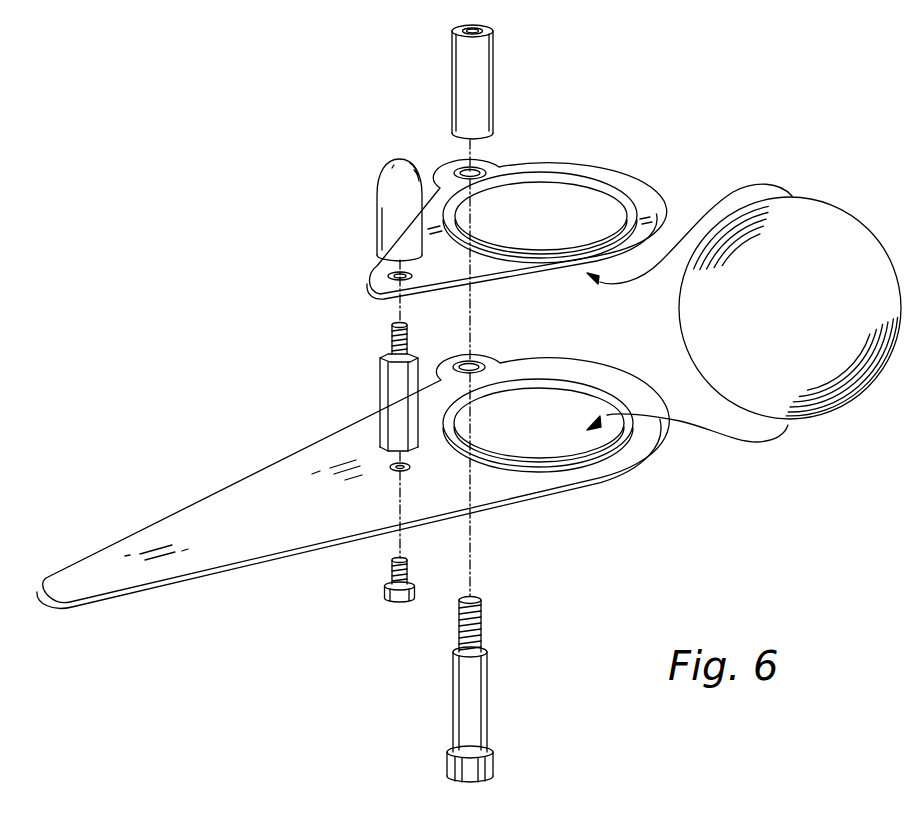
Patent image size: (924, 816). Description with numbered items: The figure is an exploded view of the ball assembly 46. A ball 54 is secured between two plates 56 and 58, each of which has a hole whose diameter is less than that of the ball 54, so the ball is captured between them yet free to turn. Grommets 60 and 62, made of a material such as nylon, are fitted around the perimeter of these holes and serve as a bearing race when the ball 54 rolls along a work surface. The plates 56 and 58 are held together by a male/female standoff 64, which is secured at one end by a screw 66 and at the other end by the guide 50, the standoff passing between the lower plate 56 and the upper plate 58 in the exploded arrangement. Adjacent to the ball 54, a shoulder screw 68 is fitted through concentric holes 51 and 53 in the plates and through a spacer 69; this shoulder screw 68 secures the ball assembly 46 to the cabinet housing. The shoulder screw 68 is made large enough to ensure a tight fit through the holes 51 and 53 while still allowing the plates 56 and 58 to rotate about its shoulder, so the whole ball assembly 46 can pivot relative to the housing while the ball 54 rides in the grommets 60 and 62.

The ball assembly 46 is at (332, 322).
The guide 50 is at (377, 181).
The hole 51 is at (473, 365).
The hole 53 is at (476, 170).
The ball 54 is at (833, 203).
The plate 56 is at (355, 520).
The plate 58 is at (462, 277).
The grommet 60 is at (613, 187).
The grommet 62 is at (607, 390).
The male/female standoff 64 is at (380, 381).
The screw 66 is at (388, 592).
The shoulder screw 68 is at (473, 690).
The spacer 69 is at (495, 91).